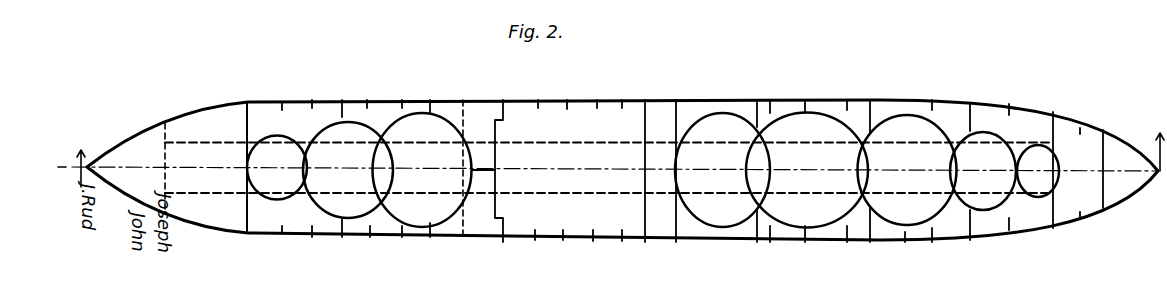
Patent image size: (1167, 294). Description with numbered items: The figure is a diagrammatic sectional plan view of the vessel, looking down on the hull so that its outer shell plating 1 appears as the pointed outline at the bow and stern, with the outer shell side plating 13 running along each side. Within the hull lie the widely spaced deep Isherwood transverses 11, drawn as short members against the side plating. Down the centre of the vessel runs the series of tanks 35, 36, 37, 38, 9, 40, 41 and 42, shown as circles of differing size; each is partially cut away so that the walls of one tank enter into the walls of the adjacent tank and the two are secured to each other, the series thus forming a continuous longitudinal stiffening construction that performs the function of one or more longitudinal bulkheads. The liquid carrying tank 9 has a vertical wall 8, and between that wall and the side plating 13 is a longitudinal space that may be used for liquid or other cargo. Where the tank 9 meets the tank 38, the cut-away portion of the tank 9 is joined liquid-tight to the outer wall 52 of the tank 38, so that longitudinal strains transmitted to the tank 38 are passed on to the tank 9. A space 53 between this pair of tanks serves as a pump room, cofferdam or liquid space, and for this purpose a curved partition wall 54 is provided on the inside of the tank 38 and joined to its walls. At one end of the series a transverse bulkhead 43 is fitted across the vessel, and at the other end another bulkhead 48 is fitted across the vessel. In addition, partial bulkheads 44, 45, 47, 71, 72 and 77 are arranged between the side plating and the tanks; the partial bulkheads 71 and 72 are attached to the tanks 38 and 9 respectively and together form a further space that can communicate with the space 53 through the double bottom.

The outer shell plating 1 is at (605, 151).
The wall of liquid carrying tank 8 is at (862, 151).
The liquid carrying tank 9 is at (825, 138).
The deep Isherwood transverses 11 is at (402, 233).
The outer shell side plating 13 is at (243, 101).
The tank 35 is at (277, 148).
The tank 36 is at (362, 138).
The tank 37 is at (448, 147).
The tank 38 is at (707, 128).
The tank 40 is at (903, 198).
The tank 41 is at (993, 150).
The tank 42 is at (1048, 170).
The transverse bulk-head 43 is at (247, 126).
The partial bulk-head 44 is at (342, 102).
The partial bulk-head 45 is at (430, 102).
The partial bulk-head 47 is at (970, 110).
The bulk-head 48 is at (1060, 130).
The outer wall of tank 52 is at (770, 177).
The space between tanks 53 is at (757, 160).
The curved partition wall 54 is at (753, 188).
The partial bulk-head 71 is at (757, 107).
The partial bulk-head 72 is at (777, 108).
The partial bulk-head 77 is at (876, 103).